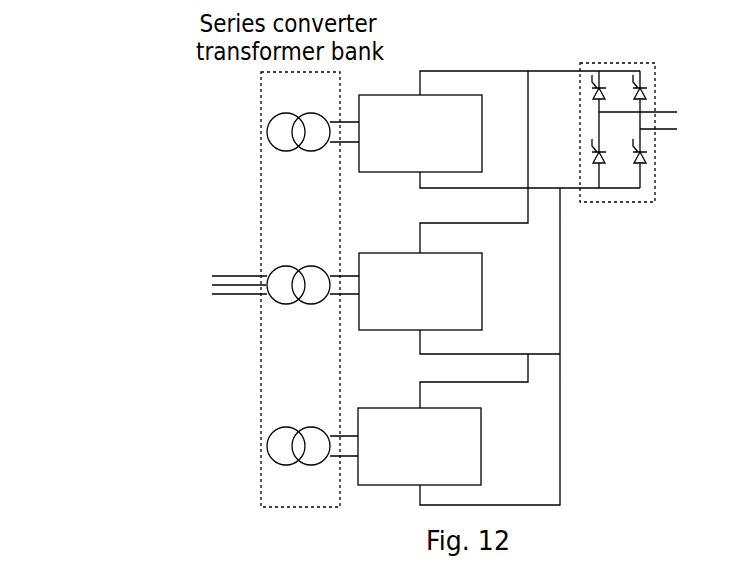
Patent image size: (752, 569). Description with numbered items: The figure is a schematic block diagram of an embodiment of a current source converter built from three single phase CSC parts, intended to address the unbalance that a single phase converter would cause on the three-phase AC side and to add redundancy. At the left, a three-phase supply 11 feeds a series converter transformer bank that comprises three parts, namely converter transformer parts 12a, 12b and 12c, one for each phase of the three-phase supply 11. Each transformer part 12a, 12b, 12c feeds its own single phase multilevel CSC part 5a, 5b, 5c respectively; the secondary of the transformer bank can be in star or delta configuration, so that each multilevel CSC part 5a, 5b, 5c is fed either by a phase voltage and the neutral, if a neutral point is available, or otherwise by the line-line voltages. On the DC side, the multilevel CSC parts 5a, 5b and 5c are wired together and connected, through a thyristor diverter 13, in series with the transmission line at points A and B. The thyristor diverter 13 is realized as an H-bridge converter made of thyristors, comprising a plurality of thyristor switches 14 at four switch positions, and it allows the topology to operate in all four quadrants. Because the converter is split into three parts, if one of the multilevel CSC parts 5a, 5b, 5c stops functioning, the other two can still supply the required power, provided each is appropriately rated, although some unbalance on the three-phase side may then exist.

The three-phase supply 11 is at (190, 216).
The converter transformer part 12a is at (283, 456).
The converter transformer part 12b is at (284, 302).
The converter transformer part 12c is at (283, 146).
The multilevel CSC part 5a is at (369, 473).
The multilevel CSC part 5b is at (369, 318).
The multilevel CSC part 5c is at (369, 160).
The thyristor diverter 13 is at (650, 123).
The thyristor switch 14 is at (641, 157).